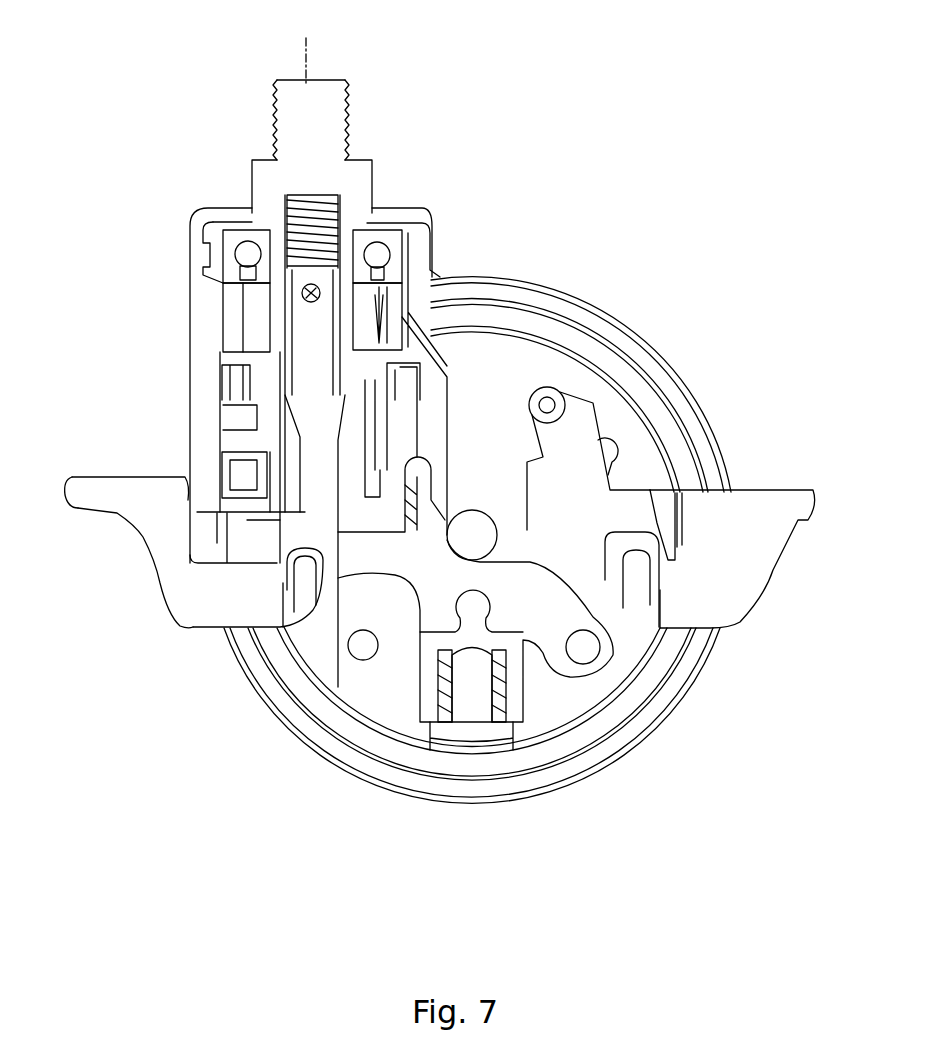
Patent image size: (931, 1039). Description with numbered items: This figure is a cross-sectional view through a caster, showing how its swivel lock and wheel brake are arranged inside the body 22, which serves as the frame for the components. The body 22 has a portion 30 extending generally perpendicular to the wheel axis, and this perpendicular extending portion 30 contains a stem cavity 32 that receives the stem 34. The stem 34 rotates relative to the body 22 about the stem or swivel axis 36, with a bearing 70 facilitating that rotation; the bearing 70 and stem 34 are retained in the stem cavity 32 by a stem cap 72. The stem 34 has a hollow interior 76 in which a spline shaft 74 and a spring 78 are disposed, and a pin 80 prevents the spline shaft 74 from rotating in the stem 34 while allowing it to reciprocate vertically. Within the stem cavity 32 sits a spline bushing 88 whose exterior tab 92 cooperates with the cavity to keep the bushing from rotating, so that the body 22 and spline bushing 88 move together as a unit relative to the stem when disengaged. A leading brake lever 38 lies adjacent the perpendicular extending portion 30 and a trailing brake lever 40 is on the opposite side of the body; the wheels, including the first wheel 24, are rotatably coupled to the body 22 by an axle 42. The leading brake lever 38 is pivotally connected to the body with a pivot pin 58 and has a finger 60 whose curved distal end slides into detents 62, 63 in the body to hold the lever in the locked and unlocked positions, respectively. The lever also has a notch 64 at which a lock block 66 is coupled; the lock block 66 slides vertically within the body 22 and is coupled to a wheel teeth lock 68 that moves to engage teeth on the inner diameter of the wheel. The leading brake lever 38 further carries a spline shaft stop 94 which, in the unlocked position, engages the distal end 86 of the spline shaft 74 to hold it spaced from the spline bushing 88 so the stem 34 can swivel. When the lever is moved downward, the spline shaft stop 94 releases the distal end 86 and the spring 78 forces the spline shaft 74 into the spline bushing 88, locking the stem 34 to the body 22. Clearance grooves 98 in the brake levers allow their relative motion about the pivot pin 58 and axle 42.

The body 22 is at (432, 427).
The first wheel 24 is at (683, 694).
The perpendicular extending portion 30 is at (183, 295).
The stem cavity 32 is at (223, 335).
The stem 34 is at (297, 88).
The stem or swivel axis 36 is at (305, 51).
The leading brake lever 38 is at (75, 503).
The trailing brake lever 40 is at (813, 494).
The axle 42 is at (497, 537).
The pivot pin 58 is at (584, 650).
The finger 60 is at (350, 460).
The detent 62 is at (417, 452).
The detent 63 is at (520, 527).
The notch 64 is at (452, 628).
The lock block 66 is at (438, 660).
The wheel teeth lock 68 is at (468, 700).
The bearing 70 is at (244, 250).
The stem cap 72 is at (205, 210).
The spline shaft 74 is at (328, 367).
The hollow interior 76 is at (337, 195).
The spring 78 is at (320, 210).
The pin 80 is at (303, 291).
The distal end 86 is at (303, 511).
The spline bushing 88 is at (252, 443).
The tab 92 is at (237, 472).
The spline shaft stop 94 is at (300, 543).
The clearance grooves 98 is at (657, 590).